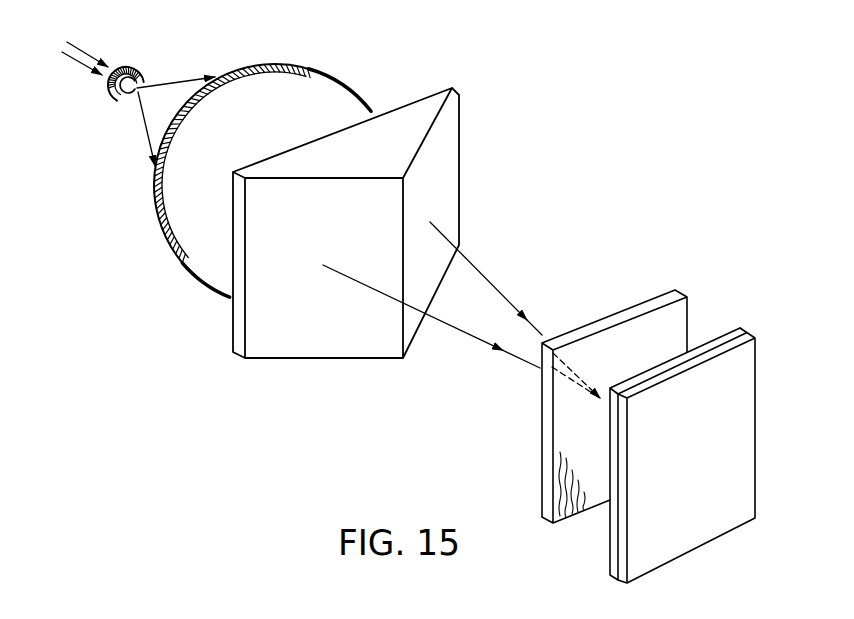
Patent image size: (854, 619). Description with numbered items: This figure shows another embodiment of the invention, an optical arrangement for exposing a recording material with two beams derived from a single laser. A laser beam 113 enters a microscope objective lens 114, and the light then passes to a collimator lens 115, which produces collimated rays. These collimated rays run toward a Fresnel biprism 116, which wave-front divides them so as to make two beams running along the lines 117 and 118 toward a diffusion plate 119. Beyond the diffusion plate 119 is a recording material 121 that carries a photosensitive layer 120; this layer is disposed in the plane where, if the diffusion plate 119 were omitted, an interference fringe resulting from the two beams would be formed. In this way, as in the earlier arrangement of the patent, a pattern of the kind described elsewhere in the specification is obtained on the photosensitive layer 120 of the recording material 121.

The laser beam 113 is at (75, 60).
The microscope objective lens 114 is at (137, 67).
The collimator lens 115 is at (307, 63).
The Fresnel biprism 116 is at (415, 107).
The line 117 is at (455, 332).
The line 118 is at (488, 280).
The diffusion plate 119 is at (648, 303).
The photosensitive layer 120 is at (710, 342).
The recording material 121 is at (748, 338).